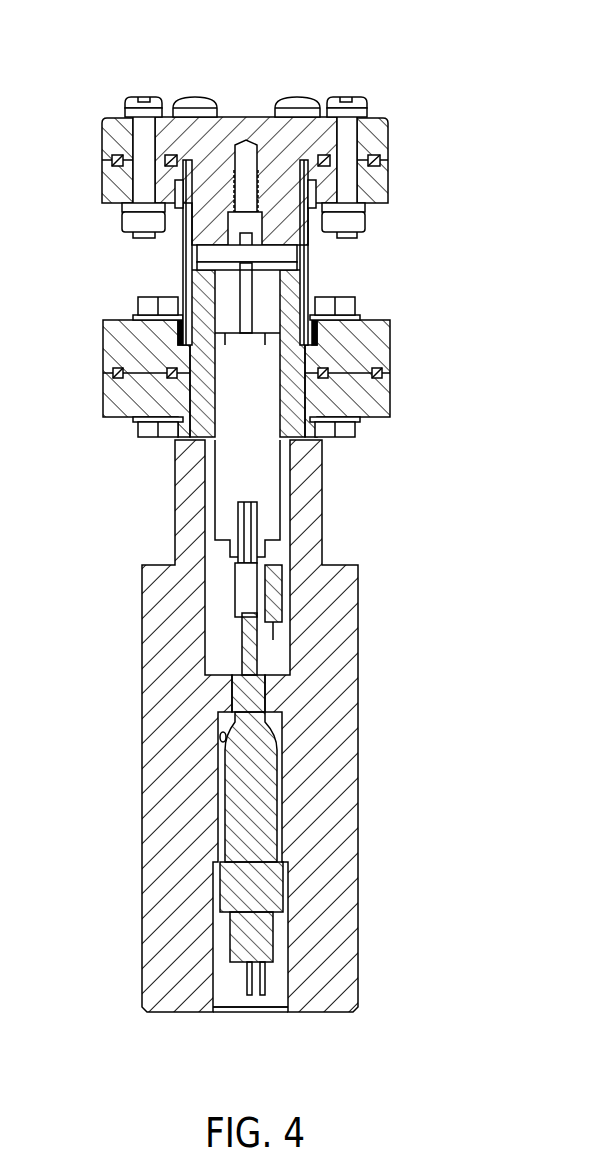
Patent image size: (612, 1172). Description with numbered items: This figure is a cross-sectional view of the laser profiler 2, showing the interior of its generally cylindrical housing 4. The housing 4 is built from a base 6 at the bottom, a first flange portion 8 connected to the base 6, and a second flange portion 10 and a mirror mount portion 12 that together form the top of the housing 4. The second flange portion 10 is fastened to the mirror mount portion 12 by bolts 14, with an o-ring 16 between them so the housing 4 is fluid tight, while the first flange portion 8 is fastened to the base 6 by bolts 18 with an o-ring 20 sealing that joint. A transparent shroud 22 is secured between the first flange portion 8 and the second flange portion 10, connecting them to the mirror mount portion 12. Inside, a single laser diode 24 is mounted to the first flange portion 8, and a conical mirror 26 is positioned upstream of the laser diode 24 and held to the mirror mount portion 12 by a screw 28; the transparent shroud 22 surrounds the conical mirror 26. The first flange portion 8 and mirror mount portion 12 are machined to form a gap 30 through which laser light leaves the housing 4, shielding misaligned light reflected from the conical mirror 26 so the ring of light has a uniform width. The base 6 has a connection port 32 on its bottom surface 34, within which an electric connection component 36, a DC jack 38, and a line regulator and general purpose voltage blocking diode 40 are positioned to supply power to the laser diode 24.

The laser profiler 2 is at (388, 66).
The cylindrical housing 4 is at (390, 502).
The base 6 is at (160, 643).
The first flange portion 8 is at (113, 350).
The second flange portion 10 is at (107, 190).
The mirror mount portion 12 is at (373, 137).
The bolts 14 is at (146, 104).
The o-ring 16 is at (168, 154).
The bolts 18 is at (160, 436).
The o-ring 20 is at (172, 379).
The transparent shroud 22 is at (308, 262).
The laser diode 24 is at (285, 478).
The conical mirror 26 is at (252, 222).
The screw 28 is at (247, 182).
The gap 30 is at (197, 258).
The connection port 32 is at (213, 1012).
The bottom surface 34 is at (308, 1012).
The electric connection component 36 is at (280, 820).
The DC jack 38 is at (250, 640).
The line regulator and general purpose voltage blocking diode 40 is at (275, 595).